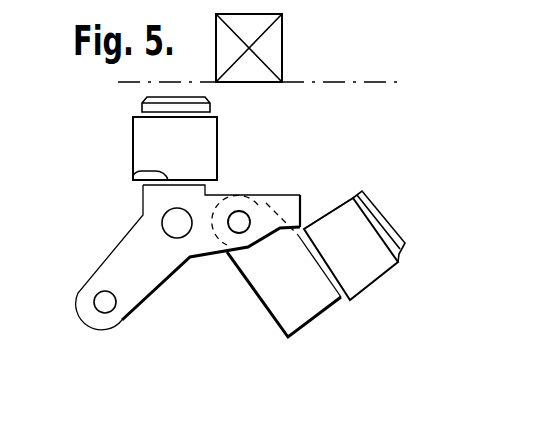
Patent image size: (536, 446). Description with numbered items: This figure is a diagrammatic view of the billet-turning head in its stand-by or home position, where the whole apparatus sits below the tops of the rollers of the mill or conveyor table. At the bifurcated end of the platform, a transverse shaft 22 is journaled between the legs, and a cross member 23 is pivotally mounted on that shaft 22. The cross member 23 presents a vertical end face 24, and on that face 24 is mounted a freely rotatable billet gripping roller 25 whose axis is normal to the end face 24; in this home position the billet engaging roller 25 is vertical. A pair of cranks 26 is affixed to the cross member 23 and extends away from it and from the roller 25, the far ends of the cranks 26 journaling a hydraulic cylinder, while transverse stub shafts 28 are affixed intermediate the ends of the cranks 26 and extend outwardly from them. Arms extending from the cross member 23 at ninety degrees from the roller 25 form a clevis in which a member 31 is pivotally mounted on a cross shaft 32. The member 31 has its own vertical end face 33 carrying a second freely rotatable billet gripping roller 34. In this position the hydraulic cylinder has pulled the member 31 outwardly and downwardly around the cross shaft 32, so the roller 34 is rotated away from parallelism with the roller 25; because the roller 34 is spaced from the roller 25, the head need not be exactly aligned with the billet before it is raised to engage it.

The transverse shaft 22 is at (175, 223).
The cross member 23 is at (194, 198).
The vertical end face 24 is at (135, 176).
The billet gripping roller 25 is at (147, 152).
The cranks 26 is at (144, 274).
The transverse stub shafts 28 is at (107, 303).
The member 31 is at (300, 310).
The cross shaft 32 is at (240, 221).
The vertical end face 33 is at (306, 245).
The second billet gripping roller 34 is at (370, 275).